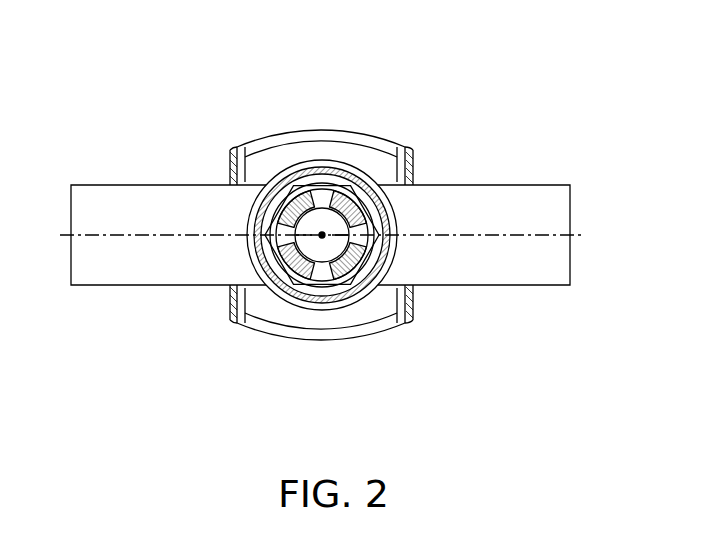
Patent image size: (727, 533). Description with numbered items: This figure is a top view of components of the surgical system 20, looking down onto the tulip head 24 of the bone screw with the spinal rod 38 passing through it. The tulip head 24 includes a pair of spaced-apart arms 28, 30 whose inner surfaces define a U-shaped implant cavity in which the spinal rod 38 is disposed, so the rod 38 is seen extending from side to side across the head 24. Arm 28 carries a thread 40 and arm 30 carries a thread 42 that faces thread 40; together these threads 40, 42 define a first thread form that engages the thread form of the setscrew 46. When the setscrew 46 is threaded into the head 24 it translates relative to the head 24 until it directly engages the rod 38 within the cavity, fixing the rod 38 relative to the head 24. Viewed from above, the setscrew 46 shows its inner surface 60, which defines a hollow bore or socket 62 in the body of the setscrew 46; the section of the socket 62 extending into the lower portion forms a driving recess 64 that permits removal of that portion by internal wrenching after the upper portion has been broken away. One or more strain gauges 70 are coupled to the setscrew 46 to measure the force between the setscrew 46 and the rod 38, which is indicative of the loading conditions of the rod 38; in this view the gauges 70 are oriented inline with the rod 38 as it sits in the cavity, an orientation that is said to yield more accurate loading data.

The surgical system 20 is at (190, 147).
The tulip head 24 is at (422, 137).
The arm 28 is at (268, 140).
The arm 30 is at (268, 323).
The spinal rod 38 is at (548, 215).
The thread 40 is at (312, 202).
The thread 42 is at (340, 268).
The setscrew 46 is at (262, 262).
The inner surface 60 is at (298, 170).
The socket 62 is at (345, 192).
The driving recess 64 is at (310, 265).
The strain gauges 70 is at (355, 252).